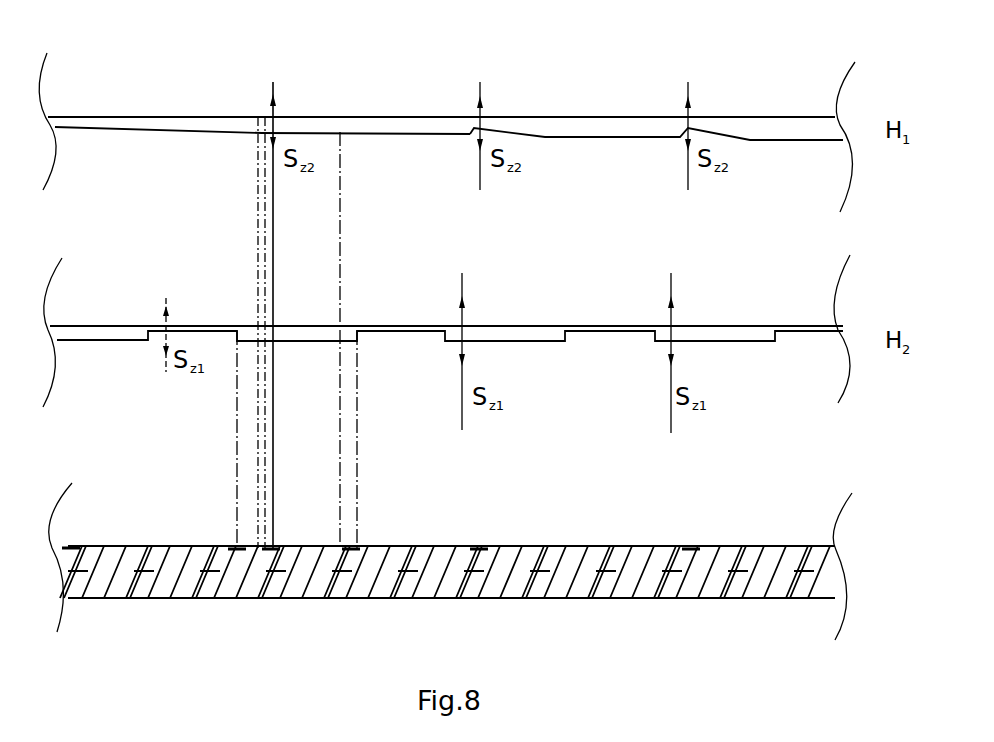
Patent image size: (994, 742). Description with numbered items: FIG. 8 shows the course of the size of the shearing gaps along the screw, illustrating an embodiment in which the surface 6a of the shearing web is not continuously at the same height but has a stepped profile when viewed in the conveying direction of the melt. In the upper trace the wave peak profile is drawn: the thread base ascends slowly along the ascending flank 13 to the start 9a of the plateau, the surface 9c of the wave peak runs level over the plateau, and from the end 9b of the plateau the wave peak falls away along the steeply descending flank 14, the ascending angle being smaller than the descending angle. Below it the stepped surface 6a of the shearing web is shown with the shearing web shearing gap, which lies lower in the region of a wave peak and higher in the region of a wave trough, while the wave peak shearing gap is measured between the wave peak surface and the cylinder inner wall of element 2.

The screw element / barrel wall 2 is at (445, 202).
The surface of the shearing web 6a is at (300, 338).
The start of the plateau of the wave peak 9a is at (262, 118).
The end of the plateau of the wave peak 9b is at (320, 130).
The surface of the wave peak 9c is at (262, 118).
The slowly ascending flank 13 is at (342, 118).
The steeply descending flank 14 is at (262, 130).